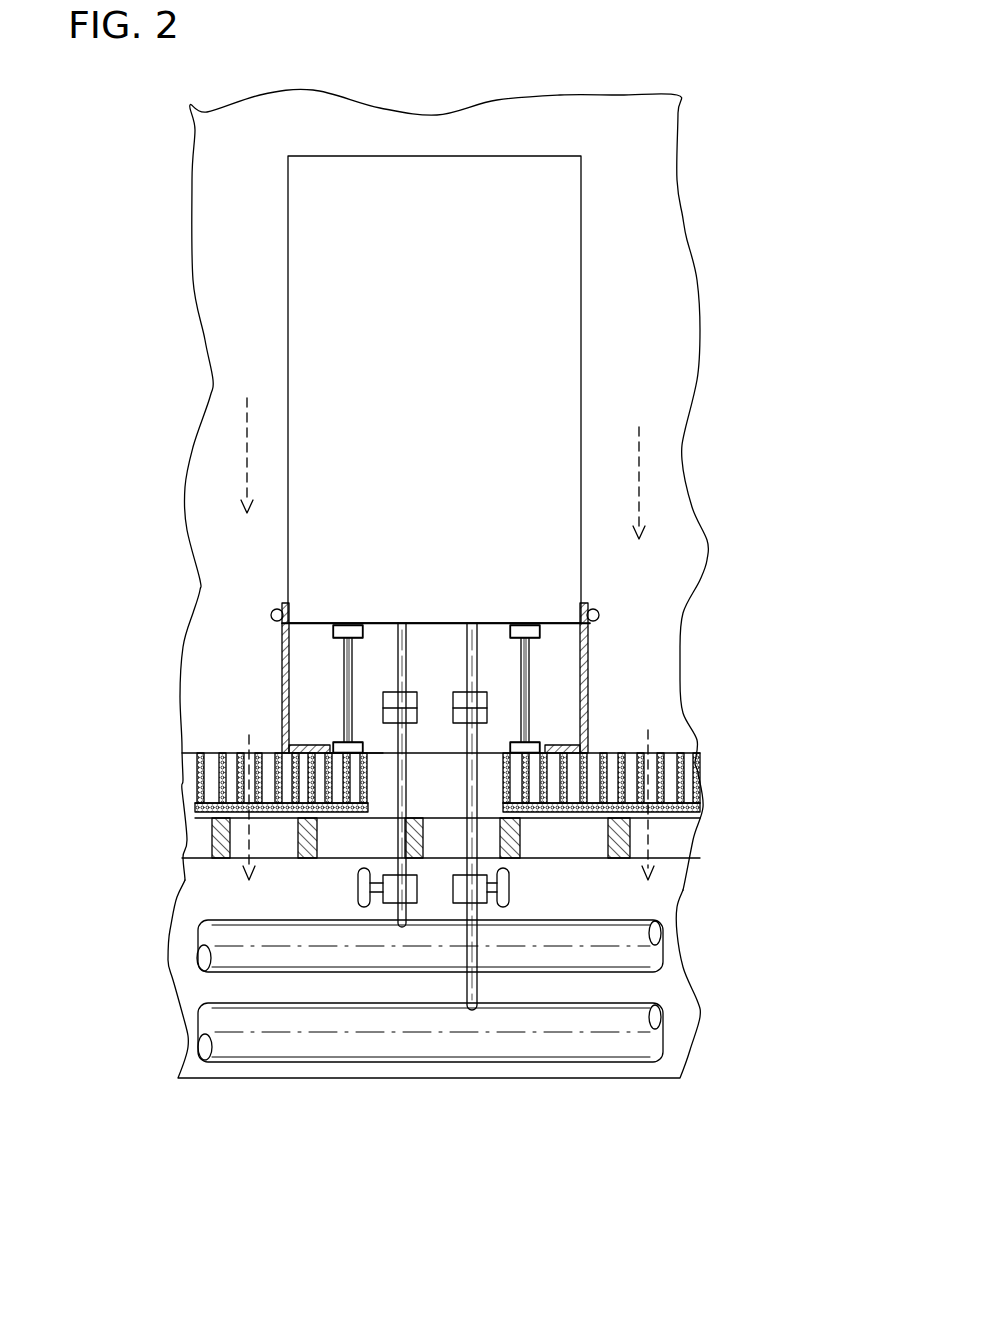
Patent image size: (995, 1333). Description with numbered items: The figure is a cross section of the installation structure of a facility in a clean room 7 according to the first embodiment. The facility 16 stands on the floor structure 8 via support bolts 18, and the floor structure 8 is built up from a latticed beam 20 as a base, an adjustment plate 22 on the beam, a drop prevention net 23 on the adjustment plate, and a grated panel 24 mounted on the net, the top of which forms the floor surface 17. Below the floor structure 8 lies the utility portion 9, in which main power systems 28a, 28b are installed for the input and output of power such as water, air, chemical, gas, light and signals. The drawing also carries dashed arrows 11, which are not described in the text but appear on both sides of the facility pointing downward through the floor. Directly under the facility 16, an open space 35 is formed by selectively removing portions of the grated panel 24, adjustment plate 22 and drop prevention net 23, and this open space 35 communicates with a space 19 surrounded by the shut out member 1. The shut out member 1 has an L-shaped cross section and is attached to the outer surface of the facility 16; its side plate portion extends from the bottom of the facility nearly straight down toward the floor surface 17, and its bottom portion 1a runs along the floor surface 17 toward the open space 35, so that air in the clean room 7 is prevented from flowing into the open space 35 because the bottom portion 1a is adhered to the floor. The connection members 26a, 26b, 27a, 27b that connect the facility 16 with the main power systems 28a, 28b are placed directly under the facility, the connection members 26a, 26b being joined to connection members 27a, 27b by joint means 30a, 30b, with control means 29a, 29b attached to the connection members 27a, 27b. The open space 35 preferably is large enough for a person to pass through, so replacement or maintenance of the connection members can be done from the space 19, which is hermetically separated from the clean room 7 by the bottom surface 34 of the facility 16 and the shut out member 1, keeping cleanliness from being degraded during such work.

The shut out member 1 is at (345, 660).
The bottom portion 1a is at (340, 708).
The clean room 7 is at (665, 262).
The floor structure 8 is at (459, 791).
The utility portion 9 is at (180, 963).
The air flow direction 11 is at (247, 452).
The facility 16 is at (575, 350).
The floor surface 17 is at (283, 748).
The support bolt 18 is at (330, 652).
The space 19 is at (500, 647).
The latticed beam 20 is at (212, 848).
The adjustment plate 22 is at (682, 814).
The drop prevention net 23 is at (680, 810).
The grated panel 24 is at (668, 772).
The connection member 26a is at (397, 640).
The connection member 26b is at (483, 625).
The connection member 27a is at (397, 837).
The connection member 27b is at (470, 830).
The main power system 28a is at (665, 945).
The main power system 28b is at (556, 1050).
The control means 29a is at (357, 890).
The control means 29b is at (515, 885).
The joint means 30a is at (383, 700).
The joint means 30b is at (487, 700).
The bottom surface 34 is at (433, 623).
The open space 35 is at (367, 780).